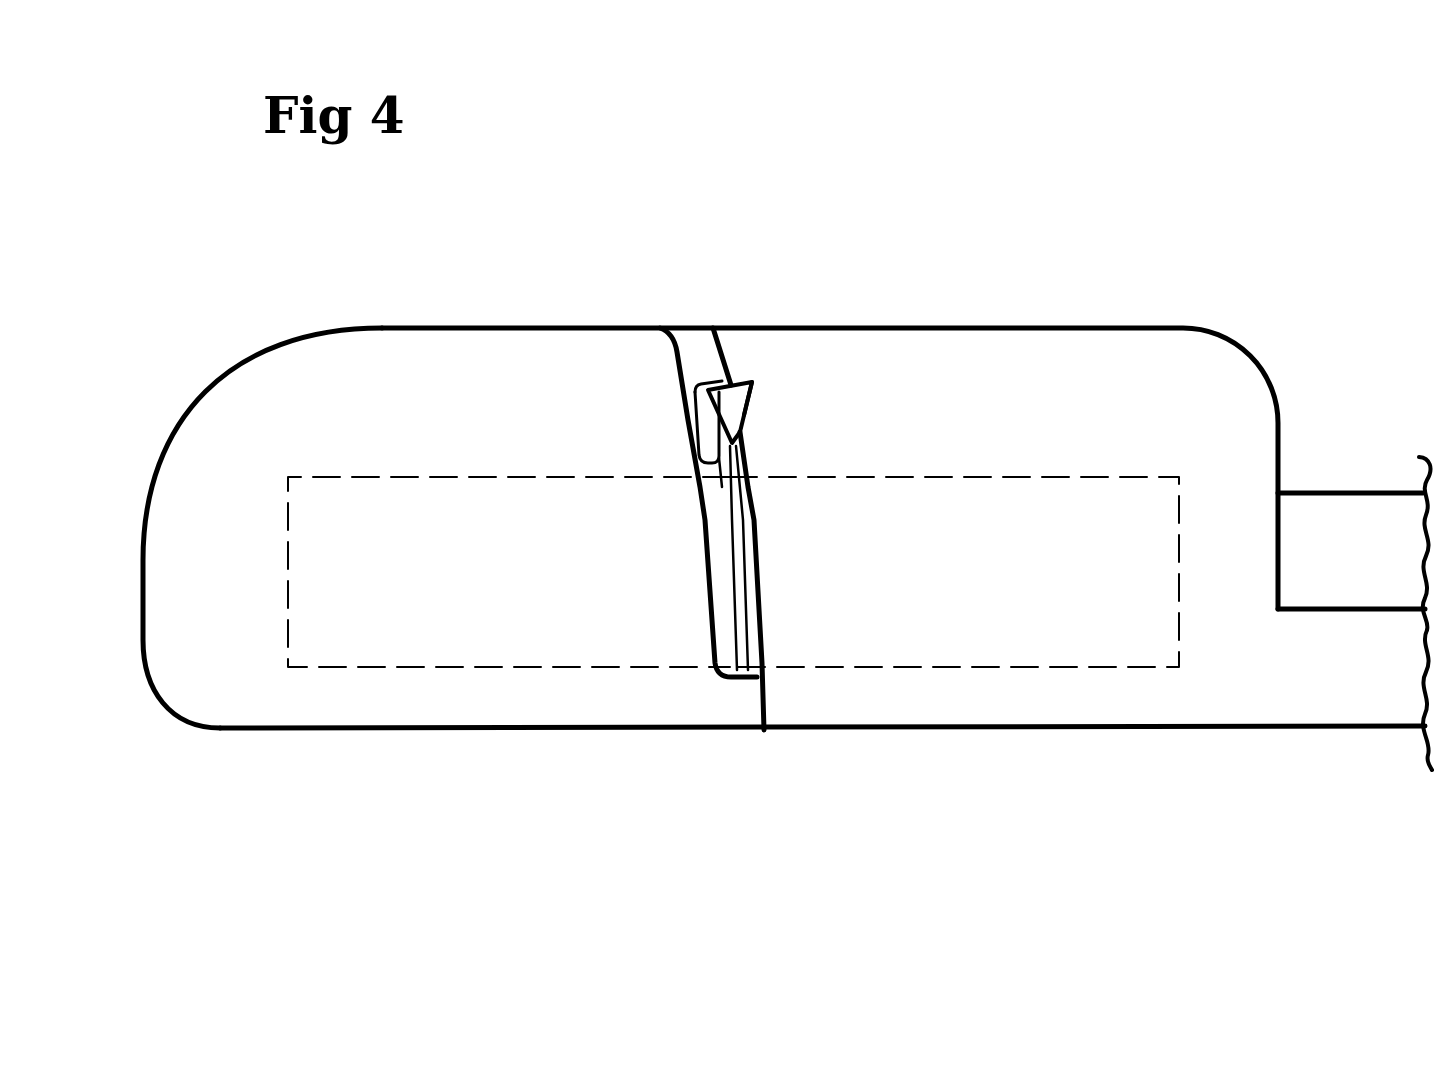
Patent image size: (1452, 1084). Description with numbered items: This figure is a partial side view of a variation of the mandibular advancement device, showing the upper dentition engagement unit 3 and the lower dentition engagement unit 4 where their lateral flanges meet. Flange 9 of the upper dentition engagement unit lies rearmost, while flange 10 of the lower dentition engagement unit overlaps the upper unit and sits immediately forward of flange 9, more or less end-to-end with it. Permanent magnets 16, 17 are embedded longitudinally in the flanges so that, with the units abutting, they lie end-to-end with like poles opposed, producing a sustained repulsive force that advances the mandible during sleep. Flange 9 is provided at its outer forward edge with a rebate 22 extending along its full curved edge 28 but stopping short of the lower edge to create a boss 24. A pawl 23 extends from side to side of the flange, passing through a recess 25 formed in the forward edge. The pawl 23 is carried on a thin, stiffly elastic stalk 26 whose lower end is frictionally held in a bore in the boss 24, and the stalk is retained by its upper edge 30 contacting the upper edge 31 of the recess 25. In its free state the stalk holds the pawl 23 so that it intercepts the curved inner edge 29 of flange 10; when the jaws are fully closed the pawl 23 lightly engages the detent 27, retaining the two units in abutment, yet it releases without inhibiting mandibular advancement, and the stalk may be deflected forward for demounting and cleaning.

The upper dentition engagement unit 3 is at (1304, 522).
The lower dentition engagement unit 4 is at (1308, 662).
The flange 9 is at (328, 417).
The flange 10 is at (1115, 400).
The permanent magnet 16 is at (427, 668).
The permanent magnet 17 is at (1110, 665).
The rebate 22 is at (720, 575).
The pawl 23 is at (705, 387).
The boss 24 is at (740, 703).
The recess 25 is at (712, 420).
The stalk 26 is at (765, 583).
The detent 27 is at (750, 400).
The curved edge 28 is at (733, 520).
The curved inner edge 29 is at (745, 522).
The upper edge 30 is at (732, 385).
The upper edge 31 is at (720, 400).